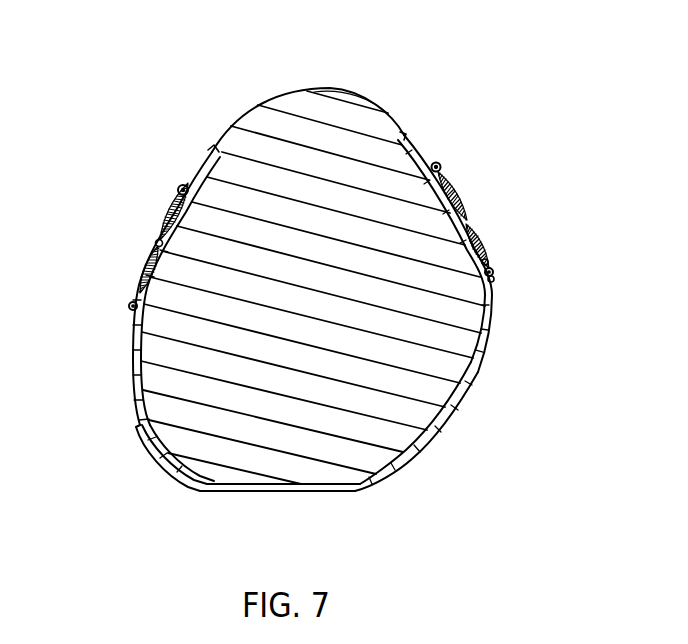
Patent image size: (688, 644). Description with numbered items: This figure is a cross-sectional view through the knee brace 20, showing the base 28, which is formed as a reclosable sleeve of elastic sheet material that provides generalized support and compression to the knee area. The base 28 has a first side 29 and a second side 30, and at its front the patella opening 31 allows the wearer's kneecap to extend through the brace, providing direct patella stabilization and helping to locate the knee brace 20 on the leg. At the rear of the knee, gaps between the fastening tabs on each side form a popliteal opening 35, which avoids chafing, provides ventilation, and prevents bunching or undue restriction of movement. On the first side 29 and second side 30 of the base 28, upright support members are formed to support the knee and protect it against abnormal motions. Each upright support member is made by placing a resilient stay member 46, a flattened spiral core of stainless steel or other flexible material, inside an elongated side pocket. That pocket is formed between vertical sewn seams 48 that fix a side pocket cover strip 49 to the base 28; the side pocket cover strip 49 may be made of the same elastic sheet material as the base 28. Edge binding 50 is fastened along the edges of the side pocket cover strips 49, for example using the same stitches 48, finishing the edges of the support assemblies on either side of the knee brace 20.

The knee brace 20 is at (126, 557).
The base 28 is at (432, 447).
The first side 29 is at (489, 317).
The second side 30 is at (133, 337).
The patella opening 31 is at (214, 148).
The popliteal opening 35 is at (316, 496).
The resilient stay member 46 is at (170, 215).
The vertical sewn seams 48 is at (180, 188).
The side pocket cover strip 49 is at (158, 236).
The edge binding 50 is at (184, 185).